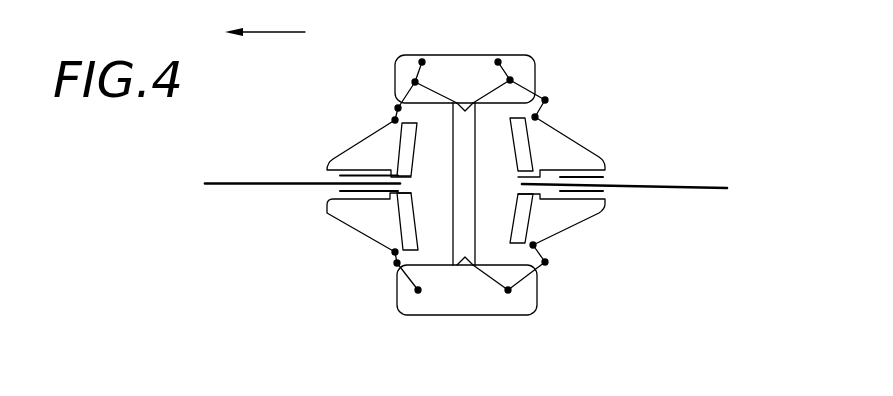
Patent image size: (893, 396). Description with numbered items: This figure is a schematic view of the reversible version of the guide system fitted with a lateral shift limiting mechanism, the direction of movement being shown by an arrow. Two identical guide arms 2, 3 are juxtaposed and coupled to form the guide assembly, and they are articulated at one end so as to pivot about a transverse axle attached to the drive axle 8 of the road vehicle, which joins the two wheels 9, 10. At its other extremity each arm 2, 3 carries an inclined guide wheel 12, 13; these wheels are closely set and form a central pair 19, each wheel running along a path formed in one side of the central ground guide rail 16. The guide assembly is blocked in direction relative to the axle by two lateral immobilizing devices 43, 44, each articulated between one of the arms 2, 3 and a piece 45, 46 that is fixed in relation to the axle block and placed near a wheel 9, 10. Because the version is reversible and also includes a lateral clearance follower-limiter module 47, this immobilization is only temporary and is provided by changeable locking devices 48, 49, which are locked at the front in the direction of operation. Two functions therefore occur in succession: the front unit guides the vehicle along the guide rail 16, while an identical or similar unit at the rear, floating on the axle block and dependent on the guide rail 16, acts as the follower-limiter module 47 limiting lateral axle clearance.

The guide arm 2 is at (336, 227).
The guide arm 3 is at (358, 146).
The drive axle 8 is at (470, 148).
The wheel 9 is at (523, 288).
The wheel 10 is at (537, 63).
The inclined guide wheel 12 is at (330, 190).
The inclined guide wheel 13 is at (334, 179).
The central ground guide rail 16 is at (690, 186).
The central pair 19 is at (296, 191).
The lateral immobilizing device 43 is at (569, 93).
The lateral immobilizing device 44 is at (380, 104).
The piece fixed in relation to the axle block 45 is at (498, 62).
The piece fixed in relation to the axle block 46 is at (422, 62).
The follower-limiter module 47 is at (623, 147).
The locking device 48 is at (465, 166).
The locking device 49 is at (464, 183).